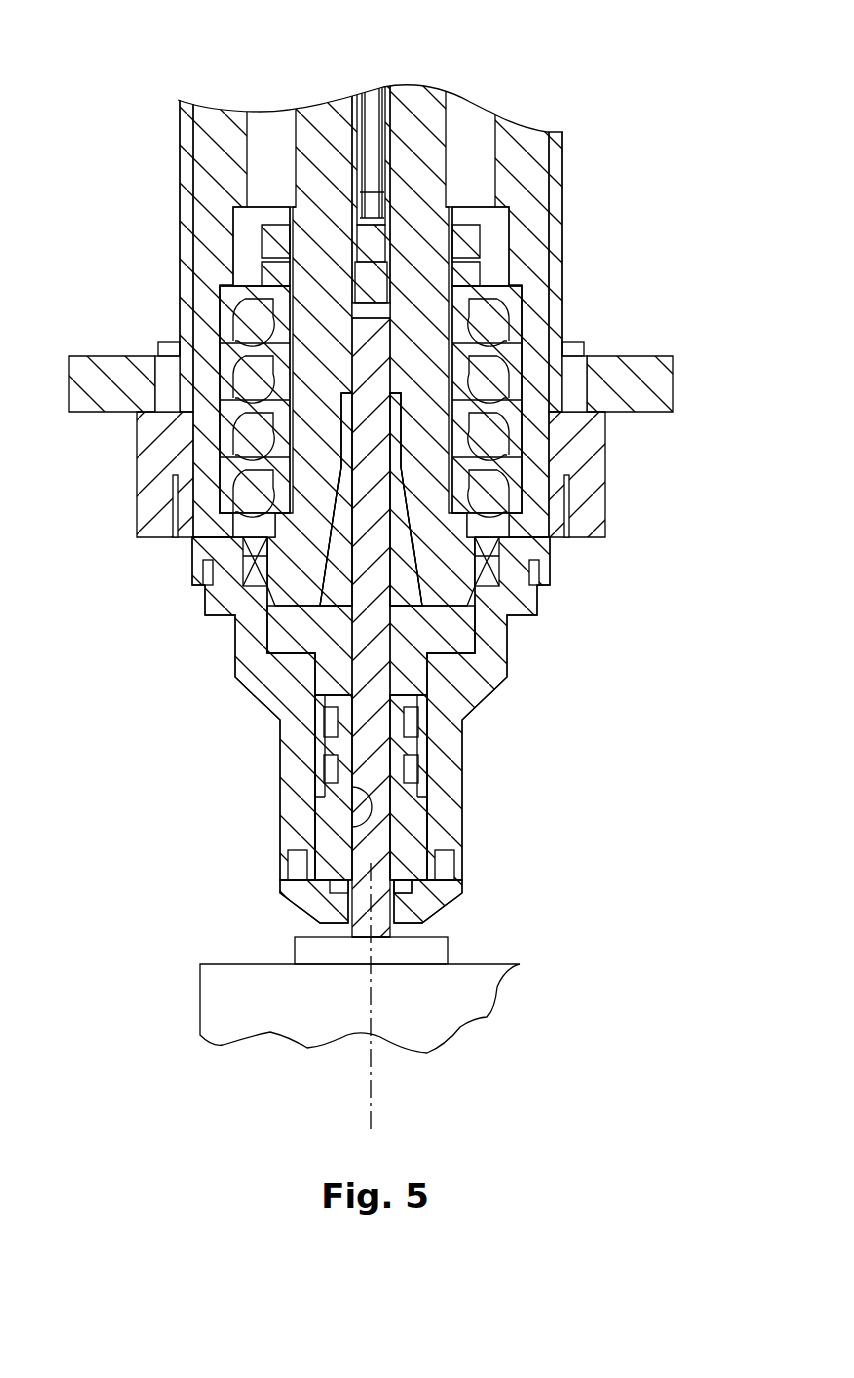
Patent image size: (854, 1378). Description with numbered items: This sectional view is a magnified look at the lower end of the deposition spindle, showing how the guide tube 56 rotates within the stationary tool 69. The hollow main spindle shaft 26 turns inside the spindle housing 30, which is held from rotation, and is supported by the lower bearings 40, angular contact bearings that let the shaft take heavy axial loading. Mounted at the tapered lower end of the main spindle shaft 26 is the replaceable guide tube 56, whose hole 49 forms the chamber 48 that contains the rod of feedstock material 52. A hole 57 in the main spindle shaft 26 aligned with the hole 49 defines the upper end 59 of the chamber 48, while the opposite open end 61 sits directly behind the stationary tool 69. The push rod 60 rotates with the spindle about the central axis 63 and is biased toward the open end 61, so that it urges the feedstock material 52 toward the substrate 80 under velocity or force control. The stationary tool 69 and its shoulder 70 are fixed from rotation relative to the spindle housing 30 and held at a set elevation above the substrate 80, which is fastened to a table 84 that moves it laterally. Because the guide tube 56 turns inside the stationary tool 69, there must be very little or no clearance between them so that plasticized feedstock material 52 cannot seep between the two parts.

The main spindle shaft 26 is at (413, 128).
The spindle housing 30 is at (178, 278).
The lower bearings 40 is at (487, 482).
The chamber 48 is at (365, 828).
The hole 49 is at (365, 597).
The feedstock material 52 is at (362, 940).
The guide tube 56 is at (420, 688).
The hole 57 is at (393, 330).
The upper end 59 is at (265, 590).
The push rod 60 is at (363, 245).
The open end 61 is at (418, 930).
The axis 63 is at (371, 1098).
The stationary tool 69 is at (445, 890).
The shoulder 70 is at (318, 930).
The substrate 80 is at (437, 947).
The table 84 is at (448, 1010).